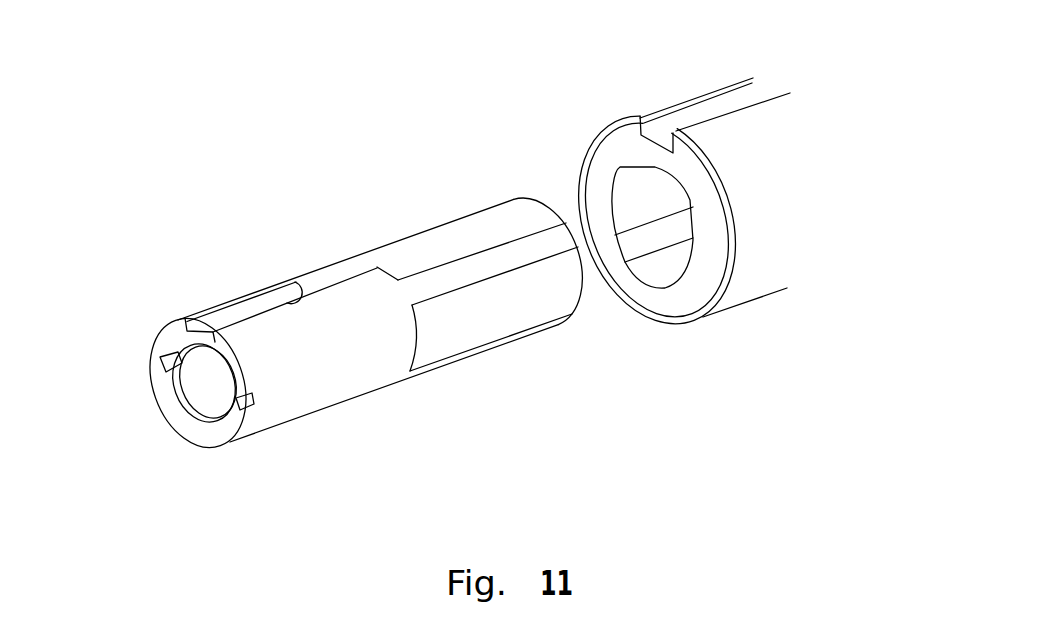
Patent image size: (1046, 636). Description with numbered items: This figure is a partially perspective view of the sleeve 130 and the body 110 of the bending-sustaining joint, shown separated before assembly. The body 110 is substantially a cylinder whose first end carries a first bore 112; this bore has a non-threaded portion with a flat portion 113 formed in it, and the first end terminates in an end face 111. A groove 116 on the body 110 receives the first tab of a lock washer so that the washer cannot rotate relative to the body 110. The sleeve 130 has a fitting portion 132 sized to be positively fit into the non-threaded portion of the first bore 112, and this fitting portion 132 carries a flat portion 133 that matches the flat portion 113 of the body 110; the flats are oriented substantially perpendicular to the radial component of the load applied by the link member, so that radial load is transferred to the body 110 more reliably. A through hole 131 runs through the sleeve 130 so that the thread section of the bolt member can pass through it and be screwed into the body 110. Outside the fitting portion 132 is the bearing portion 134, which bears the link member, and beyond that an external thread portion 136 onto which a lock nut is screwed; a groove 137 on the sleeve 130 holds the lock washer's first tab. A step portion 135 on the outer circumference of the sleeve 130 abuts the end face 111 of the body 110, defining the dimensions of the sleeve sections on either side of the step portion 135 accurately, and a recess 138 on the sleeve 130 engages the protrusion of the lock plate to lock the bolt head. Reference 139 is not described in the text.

The body 110 is at (752, 323).
The end face 111 is at (653, 297).
The first bore 112 is at (638, 207).
The flat portion 113 is at (655, 167).
The groove 116 is at (702, 115).
The sleeve 130 is at (423, 403).
The through hole 131 is at (172, 388).
The fitting portion 132 is at (510, 318).
The flat portion 133 is at (451, 238).
The bearing portion 134 is at (380, 360).
The step portion 135 is at (375, 268).
The external thread portion 136 is at (292, 385).
The groove 137 is at (252, 308).
The recess 138 is at (168, 367).
The end face 139 is at (197, 440).